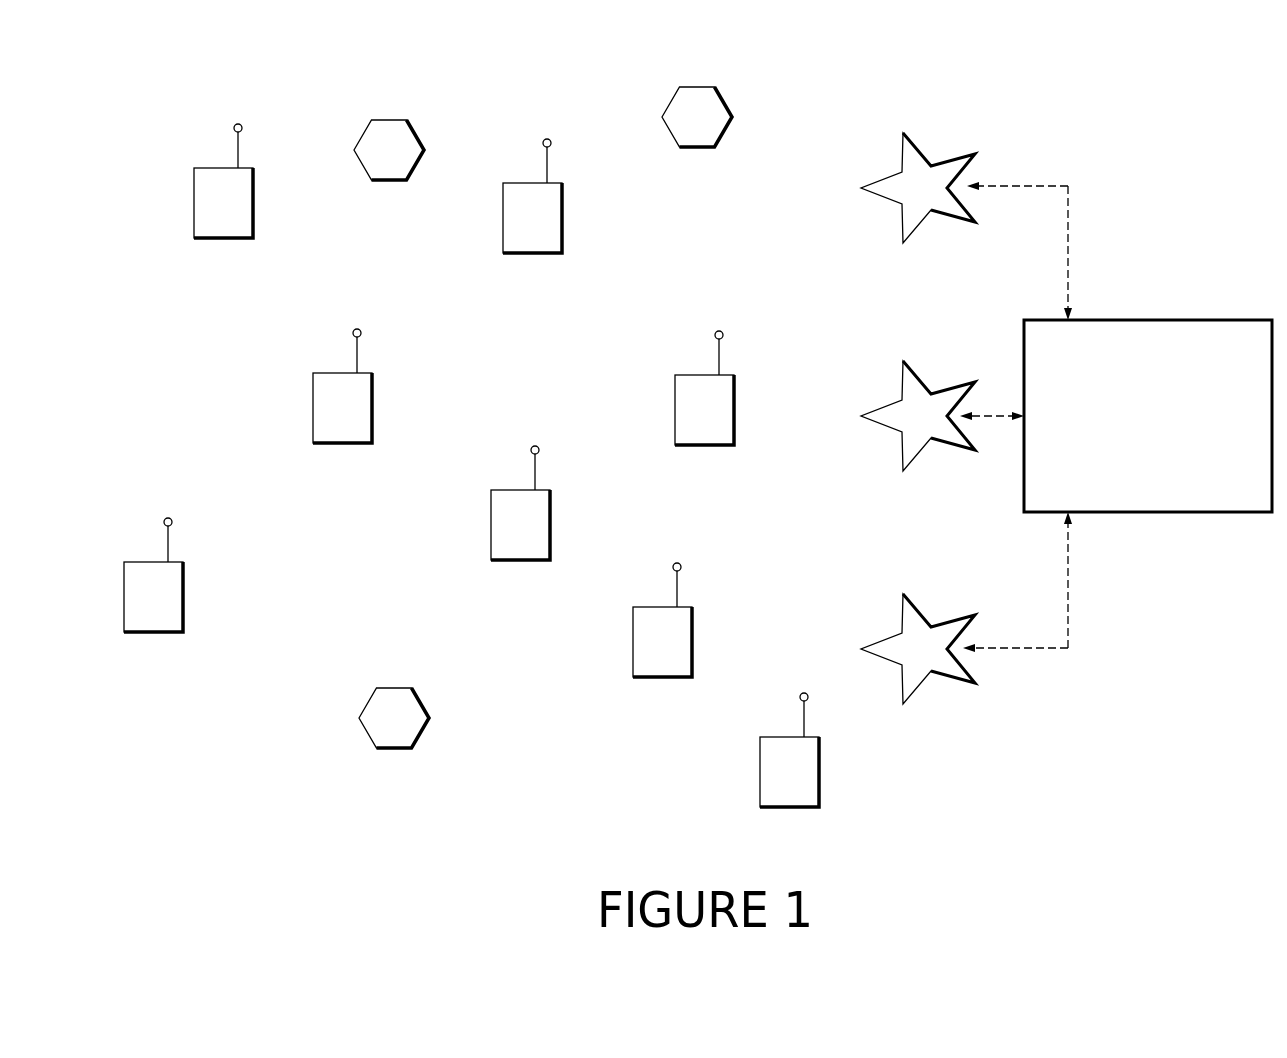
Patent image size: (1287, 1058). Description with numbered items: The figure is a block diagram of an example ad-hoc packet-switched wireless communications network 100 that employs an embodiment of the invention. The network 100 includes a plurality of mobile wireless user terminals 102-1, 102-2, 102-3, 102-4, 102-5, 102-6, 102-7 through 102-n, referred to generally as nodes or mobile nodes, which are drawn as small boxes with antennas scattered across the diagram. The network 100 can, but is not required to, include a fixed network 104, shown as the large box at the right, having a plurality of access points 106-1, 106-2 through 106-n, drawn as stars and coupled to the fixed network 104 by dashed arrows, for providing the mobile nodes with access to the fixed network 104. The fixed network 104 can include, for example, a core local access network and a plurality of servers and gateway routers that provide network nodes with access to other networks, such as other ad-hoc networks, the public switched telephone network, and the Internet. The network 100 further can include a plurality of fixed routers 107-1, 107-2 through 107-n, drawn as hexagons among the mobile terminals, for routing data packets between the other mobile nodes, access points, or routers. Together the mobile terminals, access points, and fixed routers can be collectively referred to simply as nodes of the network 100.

The ad-hoc packet-switched wireless communications network 100 is at (1116, 116).
The mobile wireless user terminal 102-1 is at (160, 632).
The mobile wireless user terminal 102-2 is at (349, 443).
The mobile wireless user terminal 102-3 is at (527, 560).
The mobile wireless user terminal 102-4 is at (669, 677).
The mobile wireless user terminal 102-5 is at (711, 445).
The mobile wireless user terminal 102-6 is at (230, 238).
The mobile wireless user terminal 102-7 is at (539, 253).
The mobile wireless user terminal 102-n is at (796, 807).
The fixed network 104 is at (1190, 512).
The access point 106-1 is at (932, 212).
The access point 106-2 is at (932, 440).
The access point 106-n is at (932, 673).
The fixed router 107-1 is at (386, 180).
The fixed router 107-2 is at (390, 748).
The fixed router 107-n is at (697, 147).